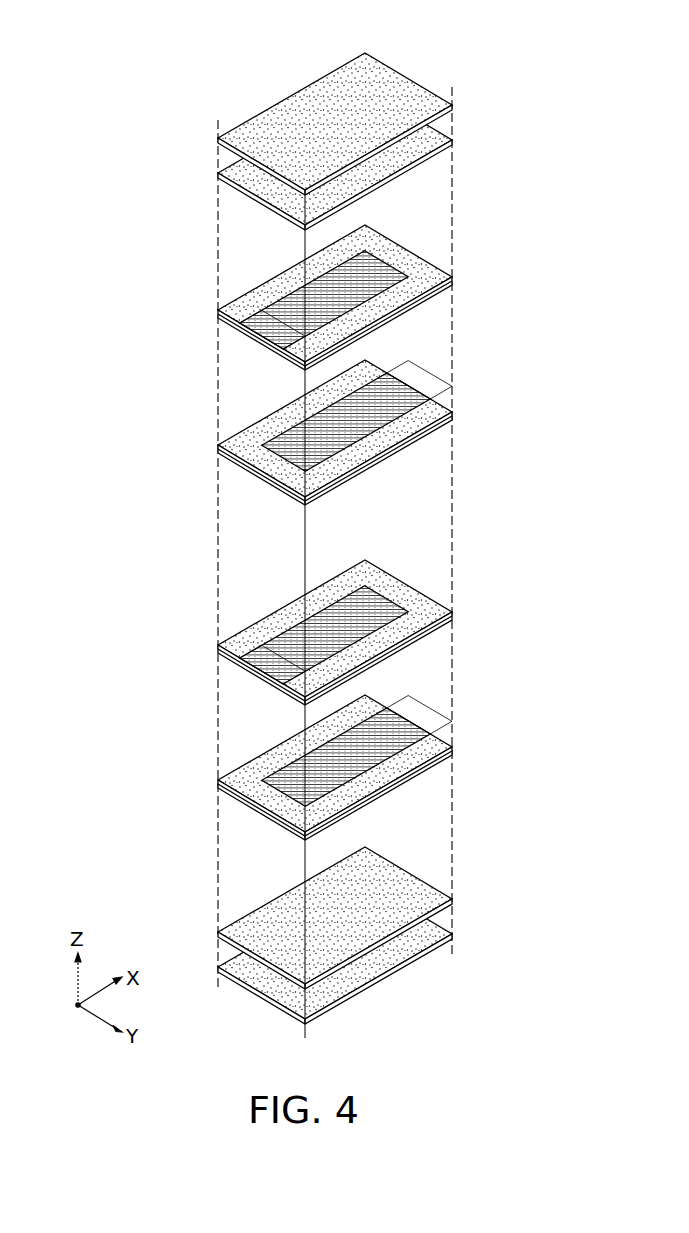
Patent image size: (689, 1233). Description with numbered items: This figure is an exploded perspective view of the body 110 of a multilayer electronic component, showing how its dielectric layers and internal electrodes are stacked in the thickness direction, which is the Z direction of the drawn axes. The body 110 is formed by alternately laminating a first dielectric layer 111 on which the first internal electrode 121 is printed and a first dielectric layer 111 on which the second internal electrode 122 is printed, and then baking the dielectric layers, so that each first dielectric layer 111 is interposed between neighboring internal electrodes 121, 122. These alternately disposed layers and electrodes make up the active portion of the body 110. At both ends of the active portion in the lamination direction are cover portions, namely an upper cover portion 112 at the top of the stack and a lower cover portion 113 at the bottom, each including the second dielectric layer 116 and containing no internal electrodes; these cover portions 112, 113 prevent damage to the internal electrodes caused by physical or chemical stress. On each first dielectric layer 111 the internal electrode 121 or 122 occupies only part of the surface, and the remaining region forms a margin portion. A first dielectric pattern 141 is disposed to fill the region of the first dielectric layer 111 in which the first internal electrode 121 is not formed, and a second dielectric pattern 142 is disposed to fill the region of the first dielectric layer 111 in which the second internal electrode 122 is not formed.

The body 110 is at (228, 24).
The first dielectric layer 111 is at (436, 290).
The upper cover portion 112 is at (198, 151).
The lower cover portion 113 is at (200, 925).
The second dielectric layer 116 is at (423, 138).
The first internal electrode 121 is at (259, 310).
The second internal electrode 122 is at (405, 392).
The first dielectric pattern 141 is at (239, 318).
The second dielectric pattern 142 is at (432, 410).